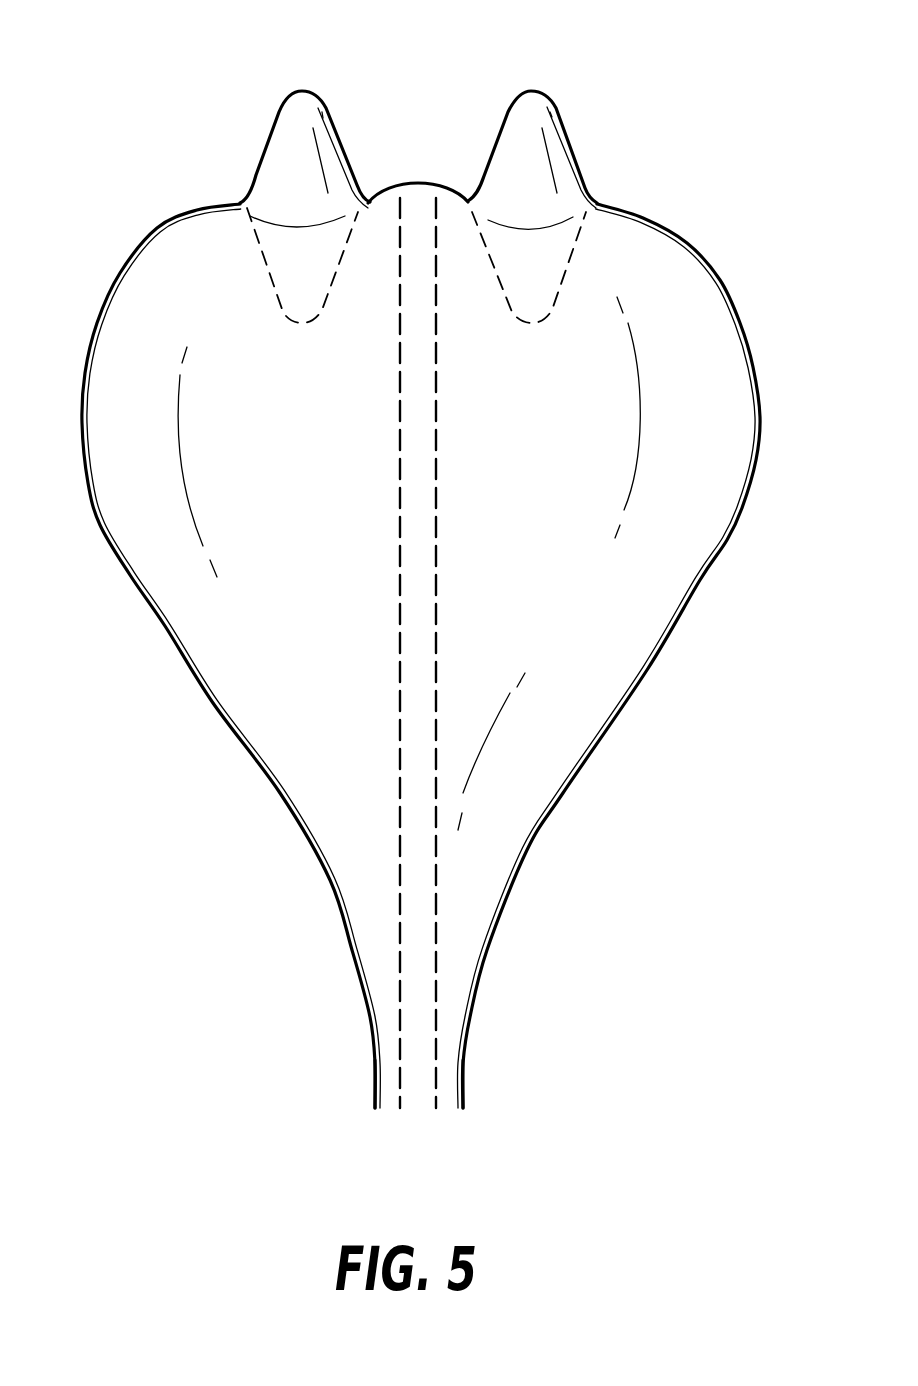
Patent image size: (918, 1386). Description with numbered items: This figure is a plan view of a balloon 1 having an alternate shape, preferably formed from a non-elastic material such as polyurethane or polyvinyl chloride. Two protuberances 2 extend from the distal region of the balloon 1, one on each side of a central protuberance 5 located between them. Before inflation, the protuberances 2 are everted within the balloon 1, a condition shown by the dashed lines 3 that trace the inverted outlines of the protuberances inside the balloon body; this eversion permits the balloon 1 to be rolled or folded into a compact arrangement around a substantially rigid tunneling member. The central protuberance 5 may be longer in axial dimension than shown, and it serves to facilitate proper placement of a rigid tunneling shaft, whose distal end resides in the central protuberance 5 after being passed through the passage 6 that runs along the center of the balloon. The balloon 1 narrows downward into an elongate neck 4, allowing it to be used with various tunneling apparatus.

The balloon 1 is at (722, 280).
The protuberances 2 is at (302, 90).
The dashed lines 3 is at (303, 328).
The elongate neck 4 is at (472, 1048).
The central protuberance 5 is at (417, 183).
The passage 6 is at (438, 585).